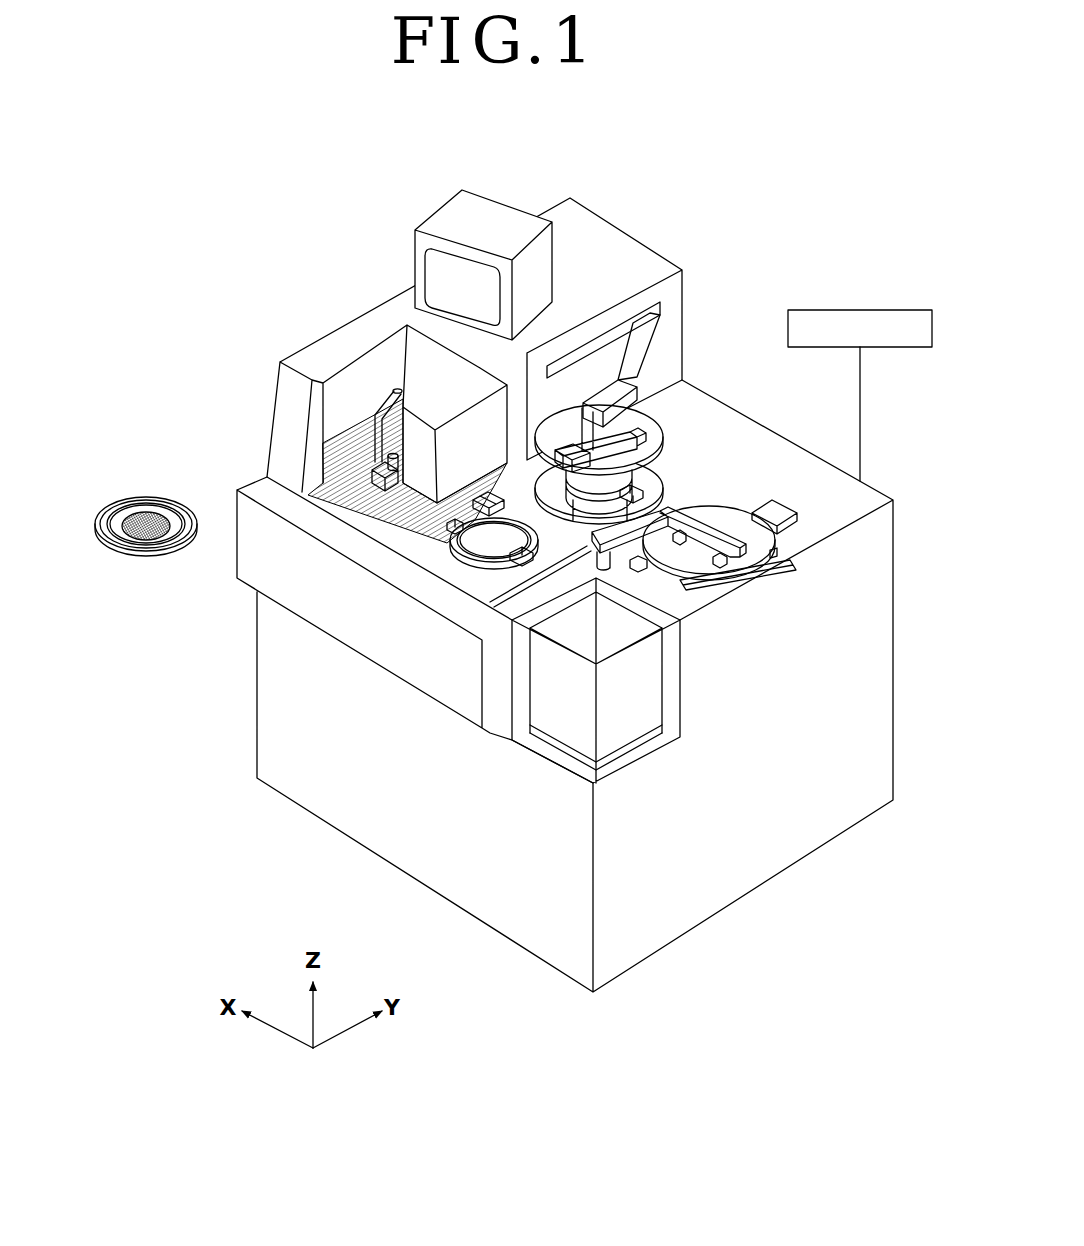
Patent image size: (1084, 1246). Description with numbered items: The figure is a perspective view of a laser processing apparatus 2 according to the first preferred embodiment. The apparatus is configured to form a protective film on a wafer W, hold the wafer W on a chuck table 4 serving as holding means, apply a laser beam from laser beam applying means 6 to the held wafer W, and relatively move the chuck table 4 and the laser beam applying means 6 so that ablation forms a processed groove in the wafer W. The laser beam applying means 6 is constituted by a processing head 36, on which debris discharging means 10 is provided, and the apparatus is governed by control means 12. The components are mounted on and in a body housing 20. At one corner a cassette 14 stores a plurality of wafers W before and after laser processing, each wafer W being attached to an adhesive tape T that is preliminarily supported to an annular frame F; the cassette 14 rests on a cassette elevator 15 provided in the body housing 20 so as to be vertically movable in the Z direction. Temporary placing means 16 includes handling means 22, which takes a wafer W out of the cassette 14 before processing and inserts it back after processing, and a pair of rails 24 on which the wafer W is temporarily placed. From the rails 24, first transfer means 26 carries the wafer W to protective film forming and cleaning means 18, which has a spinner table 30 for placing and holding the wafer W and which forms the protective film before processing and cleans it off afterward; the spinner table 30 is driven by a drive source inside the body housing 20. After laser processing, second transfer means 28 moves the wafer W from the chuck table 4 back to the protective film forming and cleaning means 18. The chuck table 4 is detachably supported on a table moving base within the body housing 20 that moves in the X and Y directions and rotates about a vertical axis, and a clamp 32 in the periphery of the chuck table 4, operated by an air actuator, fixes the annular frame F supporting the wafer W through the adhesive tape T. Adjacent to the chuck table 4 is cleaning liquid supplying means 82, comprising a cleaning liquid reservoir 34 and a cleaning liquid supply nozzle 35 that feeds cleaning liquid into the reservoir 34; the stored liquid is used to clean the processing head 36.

The laser processing apparatus 2 is at (737, 264).
The chuck table 4 is at (487, 545).
The laser beam applying means 6 is at (395, 437).
The debris discharging means 10 is at (358, 466).
The control means 12 is at (852, 310).
The cassette 14 is at (636, 694).
The cassette elevator 15 is at (617, 752).
The temporary placing means 16 is at (756, 579).
The protective film forming and cleaning means 18 is at (661, 448).
The body housing 20 is at (752, 885).
The handling means 22 is at (775, 513).
The pair of rails 24 is at (653, 563).
The first transfer means 26 is at (668, 508).
The second transfer means 28 is at (637, 353).
The spinner table 30 is at (622, 468).
The clamp 32 is at (533, 562).
The cleaning liquid reservoir 34 is at (480, 492).
The cleaning liquid supply nozzle 35 is at (560, 445).
The processing head 36 is at (365, 476).
The cleaning liquid supplying means 82 is at (473, 440).
The annular frame F is at (263, 500).
The wafer W is at (445, 542).
The adhesive tape T is at (172, 510).